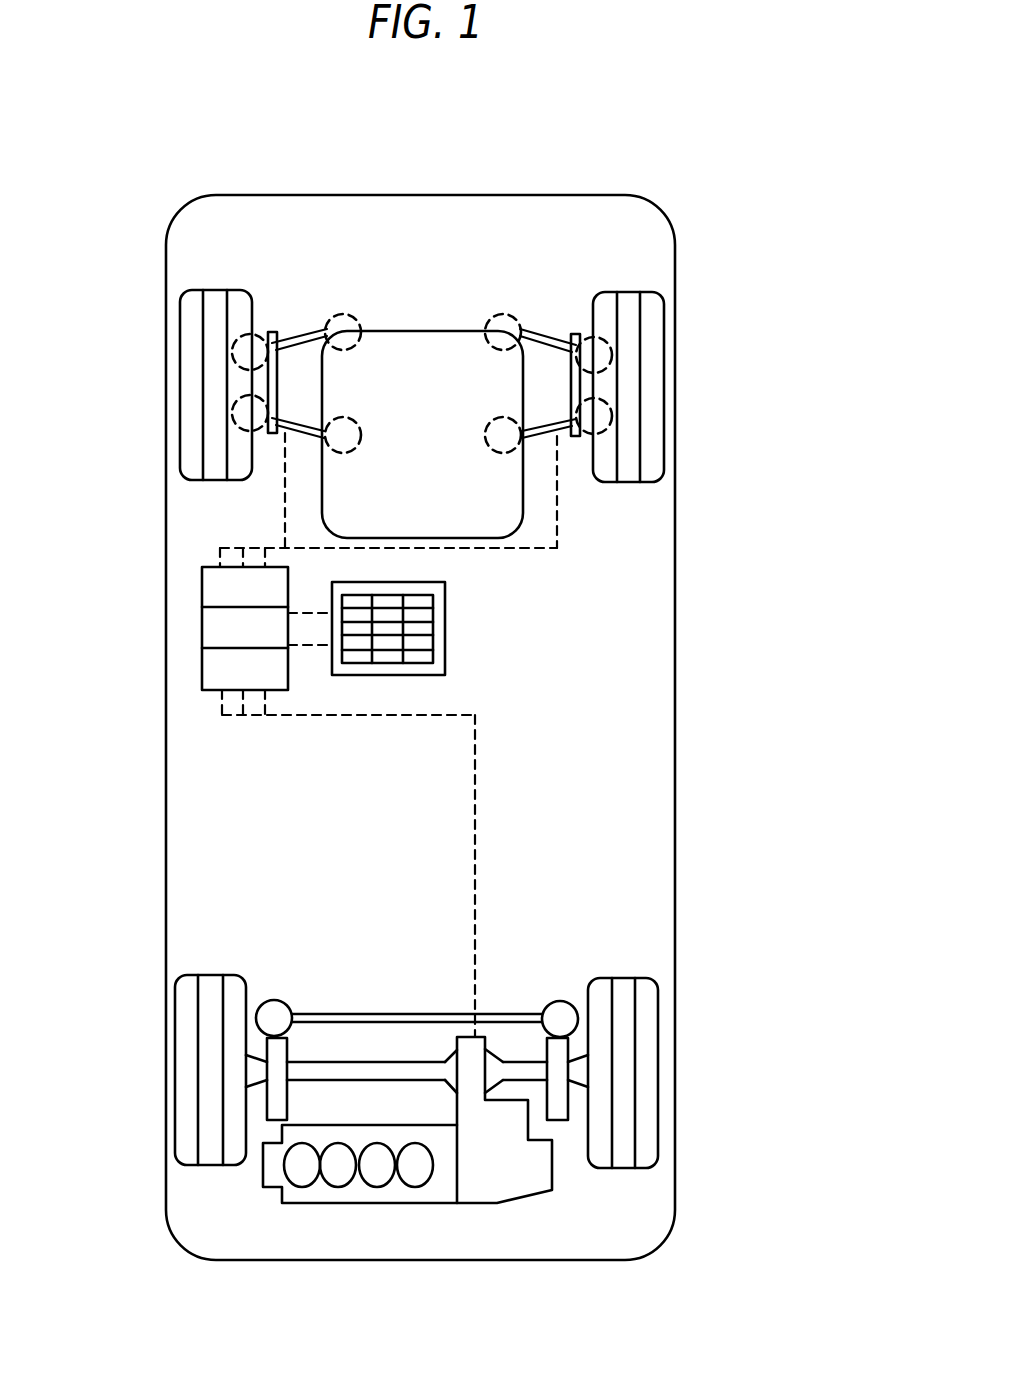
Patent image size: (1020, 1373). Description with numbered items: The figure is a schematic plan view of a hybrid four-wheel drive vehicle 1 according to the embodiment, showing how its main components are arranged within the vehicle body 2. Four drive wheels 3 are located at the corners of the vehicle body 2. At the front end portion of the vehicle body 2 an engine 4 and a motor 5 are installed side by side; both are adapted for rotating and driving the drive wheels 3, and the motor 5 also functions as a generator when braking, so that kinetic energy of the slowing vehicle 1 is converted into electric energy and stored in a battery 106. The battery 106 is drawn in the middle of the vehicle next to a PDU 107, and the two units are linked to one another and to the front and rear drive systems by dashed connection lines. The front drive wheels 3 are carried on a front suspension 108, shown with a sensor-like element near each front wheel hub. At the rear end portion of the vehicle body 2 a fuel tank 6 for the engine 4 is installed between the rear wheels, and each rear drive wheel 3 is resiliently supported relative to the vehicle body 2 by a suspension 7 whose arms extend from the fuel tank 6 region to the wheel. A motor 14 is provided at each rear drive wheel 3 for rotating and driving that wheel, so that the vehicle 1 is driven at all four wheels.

The hybrid four-wheel drive vehicle 1 is at (651, 181).
The vehicle body 2 is at (166, 862).
The drive wheel 3 is at (192, 461).
The engine 4 is at (362, 1195).
The motor 5 is at (481, 1195).
The fuel tank 6 is at (417, 340).
The suspension 7 is at (306, 327).
The motor 14 is at (296, 392).
The battery 106 is at (388, 675).
The PDU 107 is at (202, 628).
The front suspension 108 is at (274, 1008).